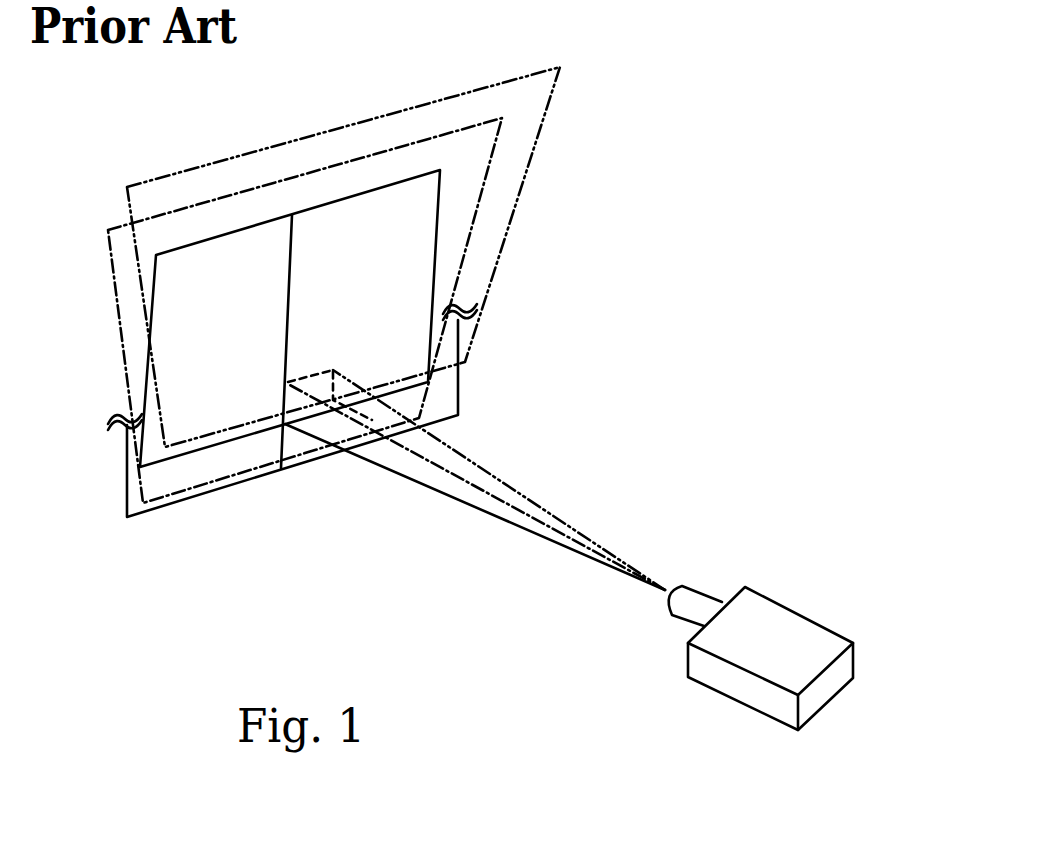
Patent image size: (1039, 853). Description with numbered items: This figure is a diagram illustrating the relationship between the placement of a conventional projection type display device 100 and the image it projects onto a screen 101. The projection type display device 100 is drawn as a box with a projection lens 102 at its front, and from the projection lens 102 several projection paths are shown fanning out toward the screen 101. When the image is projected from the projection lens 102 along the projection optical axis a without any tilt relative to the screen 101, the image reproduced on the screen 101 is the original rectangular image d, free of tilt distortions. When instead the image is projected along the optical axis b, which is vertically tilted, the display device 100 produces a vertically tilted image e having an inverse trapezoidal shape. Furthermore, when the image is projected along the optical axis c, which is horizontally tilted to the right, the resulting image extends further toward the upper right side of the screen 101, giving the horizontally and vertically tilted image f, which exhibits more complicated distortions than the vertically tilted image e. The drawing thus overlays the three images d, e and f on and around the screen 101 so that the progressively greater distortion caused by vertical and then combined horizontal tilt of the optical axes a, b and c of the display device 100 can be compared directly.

The projection type display device 100 is at (803, 612).
The screen 101 is at (458, 395).
The projection lens 102 is at (700, 588).
The projection optical axis a is at (540, 533).
The optical axis b is at (435, 462).
The optical axis c is at (507, 482).
The original rectangular image d is at (438, 242).
The vertically tilted image e is at (313, 173).
The horizontally and vertically tilted image f is at (555, 100).